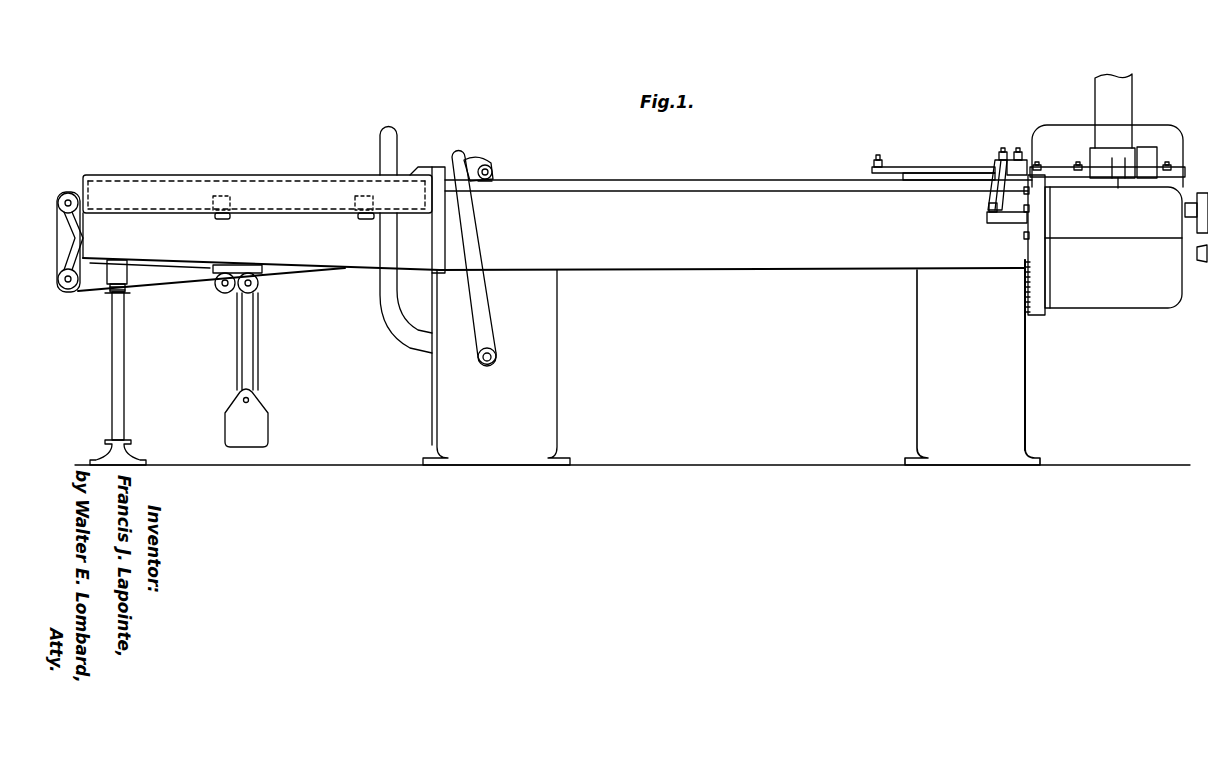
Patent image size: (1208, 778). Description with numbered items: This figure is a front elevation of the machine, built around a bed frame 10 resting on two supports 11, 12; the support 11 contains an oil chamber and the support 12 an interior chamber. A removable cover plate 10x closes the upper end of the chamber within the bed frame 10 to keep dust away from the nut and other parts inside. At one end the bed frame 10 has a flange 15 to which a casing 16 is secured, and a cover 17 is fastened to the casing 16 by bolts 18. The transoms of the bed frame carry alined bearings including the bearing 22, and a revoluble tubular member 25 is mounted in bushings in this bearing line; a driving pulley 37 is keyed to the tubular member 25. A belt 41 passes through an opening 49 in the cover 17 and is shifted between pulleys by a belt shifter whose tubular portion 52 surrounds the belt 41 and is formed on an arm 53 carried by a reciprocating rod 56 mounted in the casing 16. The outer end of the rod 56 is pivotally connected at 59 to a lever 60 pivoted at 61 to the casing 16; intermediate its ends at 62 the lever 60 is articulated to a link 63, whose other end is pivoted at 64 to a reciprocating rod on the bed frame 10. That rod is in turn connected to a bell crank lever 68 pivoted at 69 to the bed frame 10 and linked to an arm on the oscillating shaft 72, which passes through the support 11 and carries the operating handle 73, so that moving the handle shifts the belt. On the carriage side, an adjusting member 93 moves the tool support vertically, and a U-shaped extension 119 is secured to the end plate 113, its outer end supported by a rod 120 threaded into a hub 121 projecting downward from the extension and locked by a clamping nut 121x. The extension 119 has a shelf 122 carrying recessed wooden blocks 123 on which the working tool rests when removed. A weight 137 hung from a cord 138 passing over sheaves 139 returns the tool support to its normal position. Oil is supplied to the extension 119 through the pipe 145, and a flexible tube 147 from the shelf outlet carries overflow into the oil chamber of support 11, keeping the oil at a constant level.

The bed frame 10 is at (718, 258).
The cover plate 10x is at (940, 176).
The support 11 is at (550, 377).
The support 12 is at (917, 344).
The flange 15 is at (1036, 312).
The casing 16 is at (1121, 300).
The cover 17 is at (1052, 132).
The bolts 18 is at (1076, 164).
The bearing 22 is at (1203, 240).
The revoluble tubular member 25 is at (1200, 264).
The driving pulley 37 is at (1190, 203).
The belt 41 is at (1115, 86).
The opening 49 is at (1146, 158).
The tubular portion 52 is at (1107, 178).
The arm 53 is at (1120, 178).
The reciprocating rod 56 is at (999, 223).
The pivotal connection 59 is at (986, 206).
The lever 60 is at (997, 176).
The pivot 61 is at (1018, 148).
The articulation point 62 is at (1003, 148).
The link 63 is at (916, 170).
The pivotal connection 64 is at (878, 160).
The bell crank lever 68 is at (475, 160).
The pivot 69 is at (492, 168).
The oscillating shaft 72 is at (487, 366).
The operating handle 73 is at (480, 250).
The adjusting member 93 is at (490, 179).
The end plate 113 is at (438, 172).
The U-shaped extension 119 is at (327, 262).
The rod 120 is at (125, 385).
The hub 121 is at (120, 268).
The clamping nut 121x is at (108, 292).
The shelf 122 is at (163, 208).
The recessed blocks 123 is at (222, 195).
The weight 137 is at (268, 430).
The cord 138 is at (170, 284).
The sheaves 139 is at (64, 192).
The pipe 145 is at (398, 143).
The flexible tube 147 is at (394, 322).